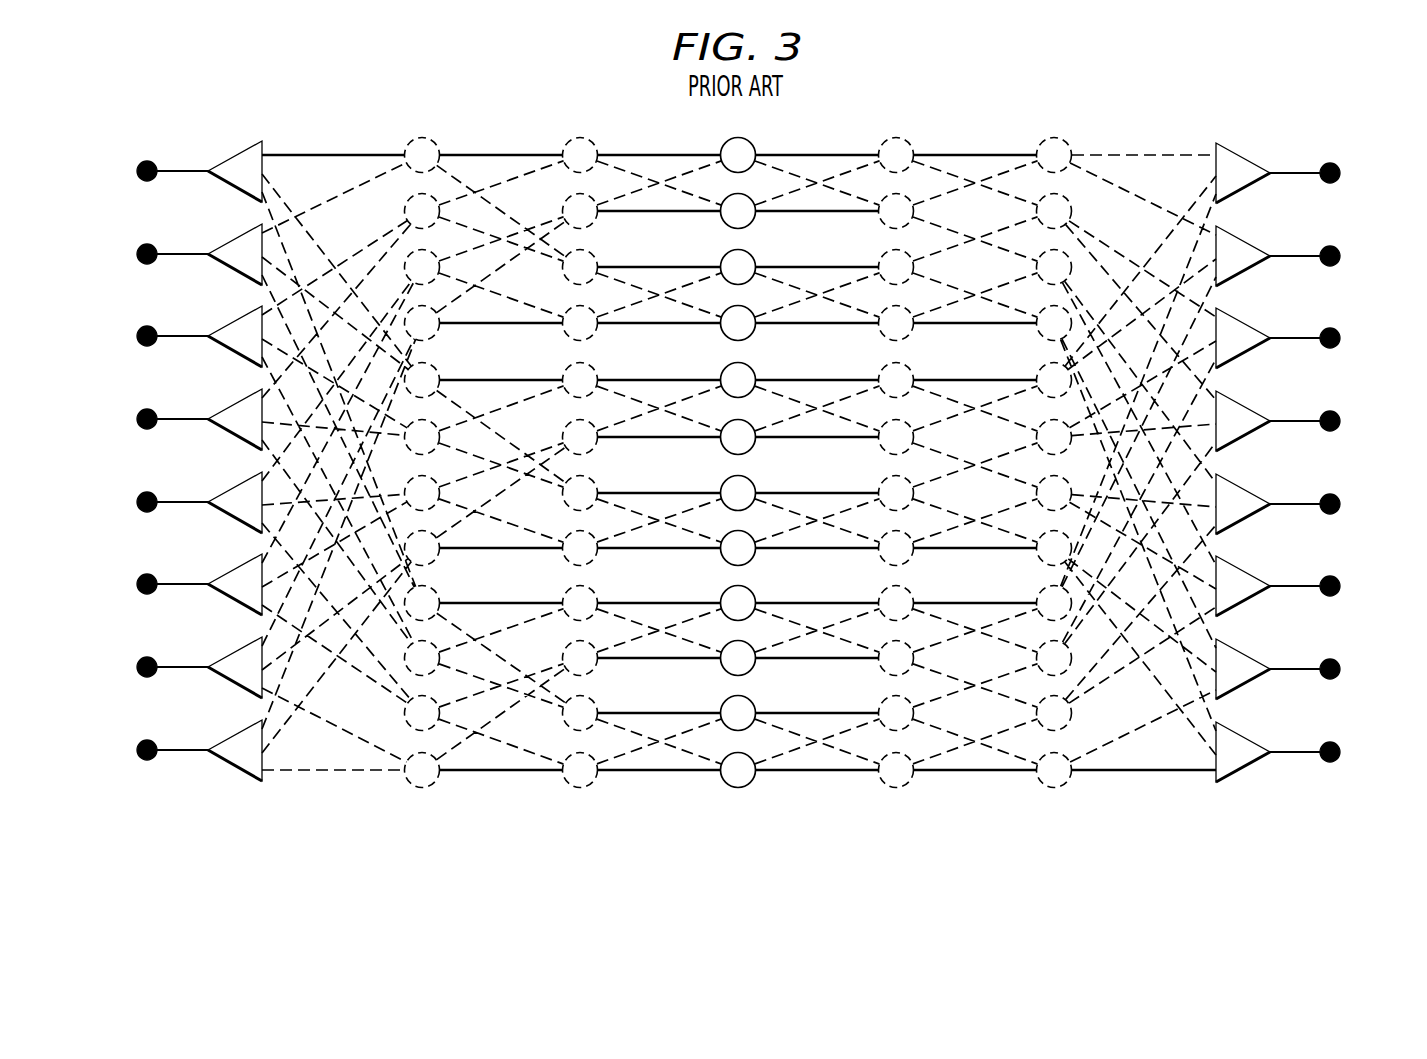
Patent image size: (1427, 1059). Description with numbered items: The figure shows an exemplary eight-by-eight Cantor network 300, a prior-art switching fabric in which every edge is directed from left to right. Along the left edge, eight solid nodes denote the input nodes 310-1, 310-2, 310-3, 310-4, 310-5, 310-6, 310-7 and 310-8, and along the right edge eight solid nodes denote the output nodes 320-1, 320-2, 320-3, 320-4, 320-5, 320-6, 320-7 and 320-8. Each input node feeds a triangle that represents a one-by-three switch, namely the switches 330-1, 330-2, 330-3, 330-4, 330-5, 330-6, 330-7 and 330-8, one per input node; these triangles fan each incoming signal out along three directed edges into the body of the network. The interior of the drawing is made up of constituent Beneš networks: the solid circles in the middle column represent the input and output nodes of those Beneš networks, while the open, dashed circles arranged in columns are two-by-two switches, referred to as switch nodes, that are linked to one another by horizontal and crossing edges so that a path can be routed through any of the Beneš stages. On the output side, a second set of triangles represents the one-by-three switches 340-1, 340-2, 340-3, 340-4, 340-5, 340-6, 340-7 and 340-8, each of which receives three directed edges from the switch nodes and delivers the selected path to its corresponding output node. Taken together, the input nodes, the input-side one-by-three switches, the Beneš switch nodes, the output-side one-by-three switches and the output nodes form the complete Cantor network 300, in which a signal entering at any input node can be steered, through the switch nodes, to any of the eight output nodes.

The 8×8 Cantor network 300 is at (1163, 73).
The input node 310-1 is at (142, 165).
The input node 310-2 is at (142, 248).
The input node 310-3 is at (142, 330).
The input node 310-4 is at (142, 413).
The input node 310-5 is at (142, 496).
The input node 310-6 is at (142, 578).
The input node 310-7 is at (142, 661).
The input node 310-8 is at (142, 744).
The output node 320-1 is at (1338, 169).
The output node 320-2 is at (1338, 252).
The output node 320-3 is at (1338, 334).
The output node 320-4 is at (1338, 417).
The output node 320-5 is at (1338, 500).
The output node 320-6 is at (1338, 582).
The output node 320-7 is at (1338, 665).
The output node 320-8 is at (1338, 748).
The 1×3 switch 330-1 is at (228, 156).
The 1×3 switch 330-2 is at (228, 239).
The 1×3 switch 330-3 is at (228, 321).
The 1×3 switch 330-4 is at (228, 404).
The 1×3 switch 330-5 is at (228, 487).
The 1×3 switch 330-6 is at (228, 569).
The 1×3 switch 330-7 is at (228, 652).
The 1×3 switch 330-8 is at (228, 735).
The 1×3 switch 340-1 is at (1243, 161).
The 1×3 switch 340-2 is at (1243, 244).
The 1×3 switch 340-3 is at (1243, 326).
The 1×3 switch 340-4 is at (1243, 409).
The 1×3 switch 340-5 is at (1243, 492).
The 1×3 switch 340-6 is at (1243, 574).
The 1×3 switch 340-7 is at (1243, 657).
The 1×3 switch 340-8 is at (1243, 740).